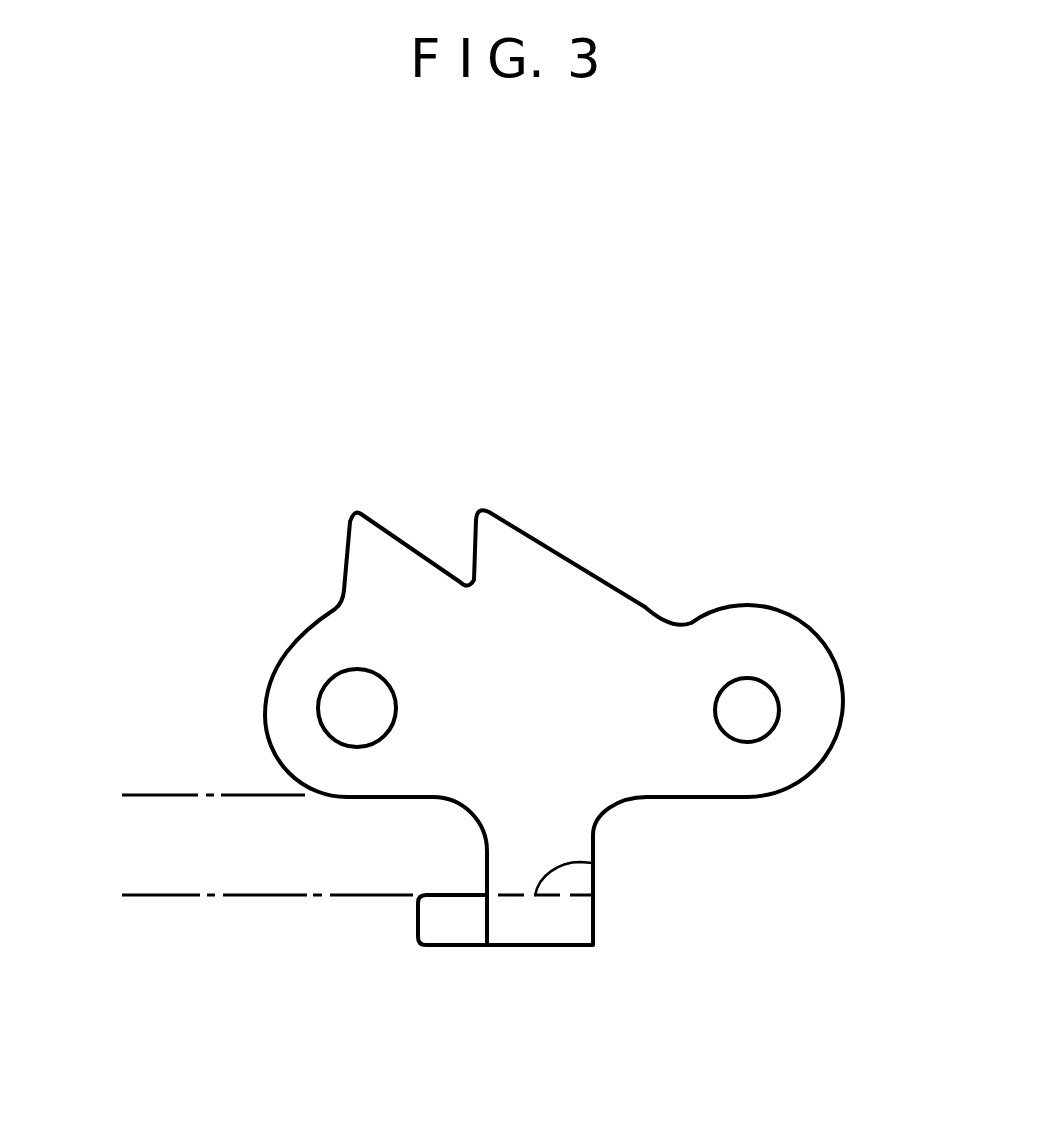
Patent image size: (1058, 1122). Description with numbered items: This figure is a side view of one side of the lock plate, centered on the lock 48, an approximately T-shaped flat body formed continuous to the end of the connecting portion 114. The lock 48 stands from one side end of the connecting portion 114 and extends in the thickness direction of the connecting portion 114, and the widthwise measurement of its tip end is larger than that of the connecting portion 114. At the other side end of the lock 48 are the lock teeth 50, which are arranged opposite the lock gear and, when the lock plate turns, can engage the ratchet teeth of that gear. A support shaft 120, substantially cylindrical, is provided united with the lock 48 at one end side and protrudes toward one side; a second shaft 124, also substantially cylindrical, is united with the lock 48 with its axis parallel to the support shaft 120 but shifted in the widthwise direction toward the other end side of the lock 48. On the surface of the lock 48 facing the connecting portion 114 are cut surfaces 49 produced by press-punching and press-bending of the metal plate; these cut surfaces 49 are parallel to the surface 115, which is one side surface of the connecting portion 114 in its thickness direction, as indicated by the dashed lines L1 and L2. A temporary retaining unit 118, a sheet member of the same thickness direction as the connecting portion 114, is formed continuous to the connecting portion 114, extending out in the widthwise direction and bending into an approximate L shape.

The lock teeth 50 is at (476, 548).
The lock 48 is at (743, 763).
The cut surfaces 49 is at (390, 796).
The connecting portion 114 is at (547, 928).
The surface 115 is at (593, 863).
The temporary retaining unit 118 is at (427, 920).
The support shaft 120 is at (753, 702).
The shaft 124 is at (347, 708).
The dashed line L1 is at (183, 796).
The dashed line L2 is at (240, 894).